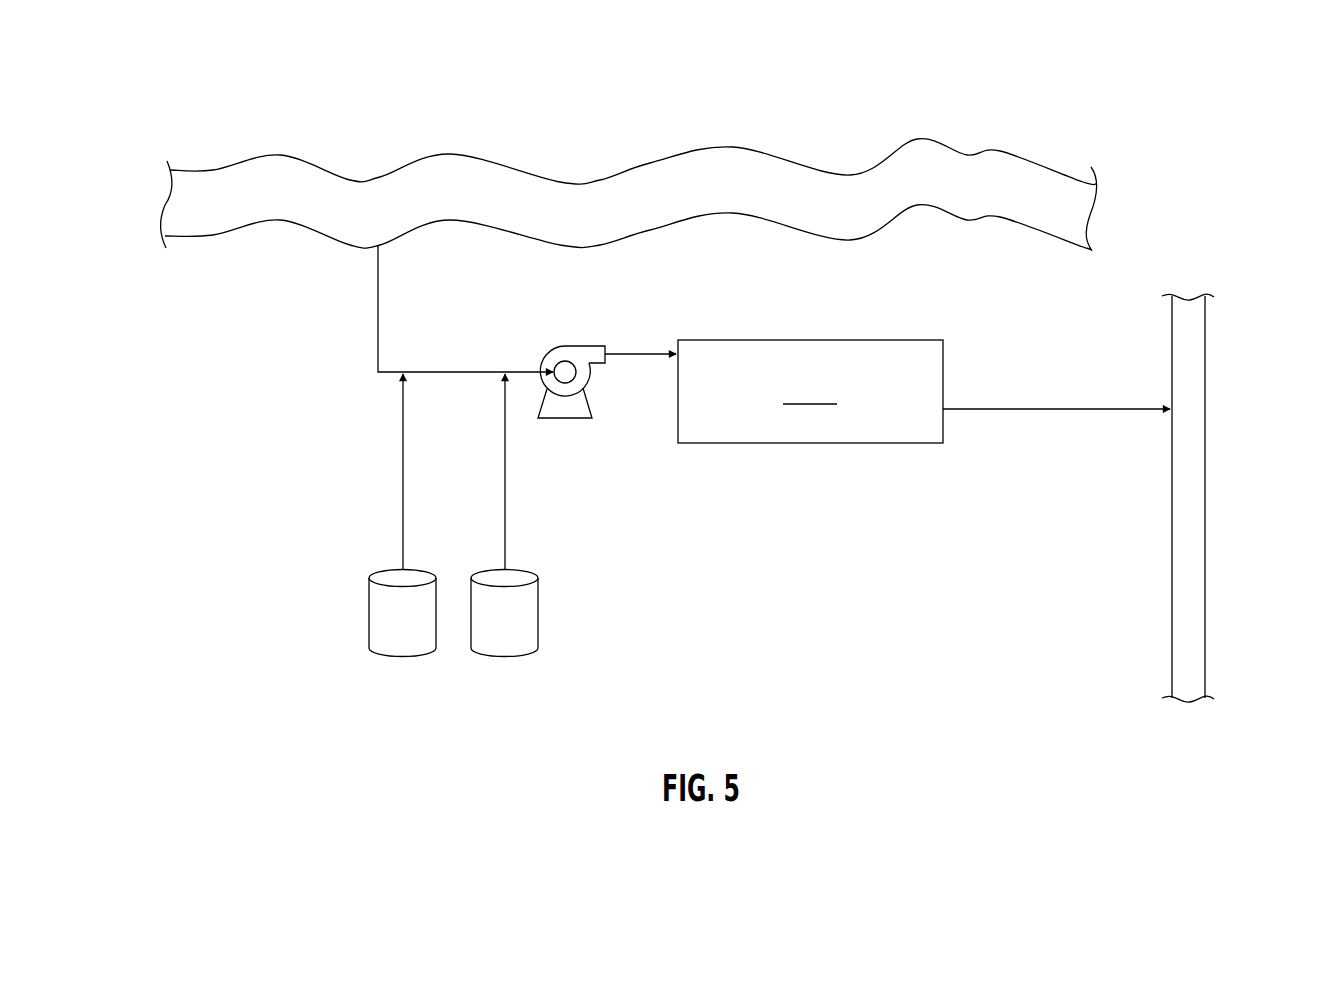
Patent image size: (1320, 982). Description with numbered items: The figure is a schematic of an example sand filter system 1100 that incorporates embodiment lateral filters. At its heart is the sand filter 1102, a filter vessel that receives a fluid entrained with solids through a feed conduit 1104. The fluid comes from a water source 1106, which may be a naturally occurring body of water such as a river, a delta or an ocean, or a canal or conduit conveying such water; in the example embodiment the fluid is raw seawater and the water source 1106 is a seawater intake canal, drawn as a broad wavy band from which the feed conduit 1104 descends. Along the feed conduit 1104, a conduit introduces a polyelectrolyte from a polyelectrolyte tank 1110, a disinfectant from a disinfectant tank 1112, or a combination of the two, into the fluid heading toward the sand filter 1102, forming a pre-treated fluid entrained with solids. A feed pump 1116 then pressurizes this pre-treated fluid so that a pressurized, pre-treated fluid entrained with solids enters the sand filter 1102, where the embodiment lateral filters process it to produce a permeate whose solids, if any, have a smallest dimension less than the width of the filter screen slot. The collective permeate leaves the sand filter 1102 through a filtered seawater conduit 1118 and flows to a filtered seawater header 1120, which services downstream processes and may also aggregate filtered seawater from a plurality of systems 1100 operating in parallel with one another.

The system 1100 is at (221, 98).
The sand filter 1102 is at (903, 340).
The feed conduit 1104 is at (378, 310).
The water source 1106 is at (423, 201).
The polyelectrolyte tank 1110 is at (369, 612).
The disinfectant tank 1112 is at (538, 612).
The feed pump 1116 is at (585, 345).
The filtered seawater conduit 1118 is at (1037, 408).
The filtered seawater header 1120 is at (1207, 497).